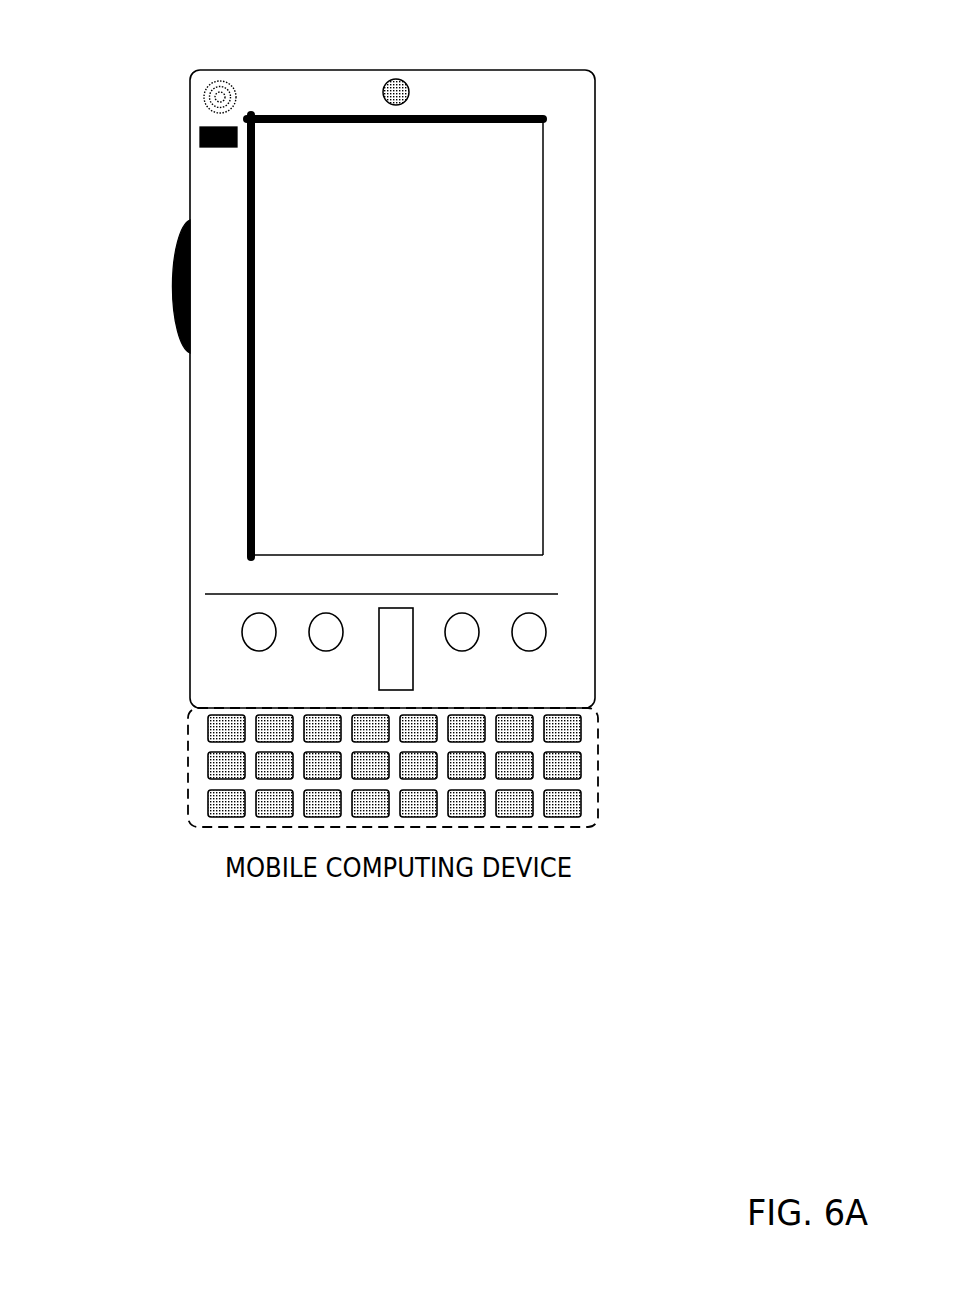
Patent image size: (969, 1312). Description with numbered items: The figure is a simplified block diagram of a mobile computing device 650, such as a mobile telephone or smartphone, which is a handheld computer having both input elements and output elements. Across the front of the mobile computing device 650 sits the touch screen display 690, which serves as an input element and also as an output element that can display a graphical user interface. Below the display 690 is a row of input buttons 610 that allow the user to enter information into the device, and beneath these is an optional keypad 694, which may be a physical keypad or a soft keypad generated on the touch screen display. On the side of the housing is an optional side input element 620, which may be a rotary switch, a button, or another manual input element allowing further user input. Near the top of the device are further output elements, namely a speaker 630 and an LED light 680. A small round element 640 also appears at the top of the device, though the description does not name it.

The input buttons 610 is at (532, 642).
The side button 620 is at (167, 295).
The speaker 630 is at (203, 88).
The camera 640 is at (407, 90).
The housing 650 is at (597, 88).
The indicator light 680 is at (200, 128).
The display screen 690 is at (273, 493).
The keyboard 694 is at (188, 795).